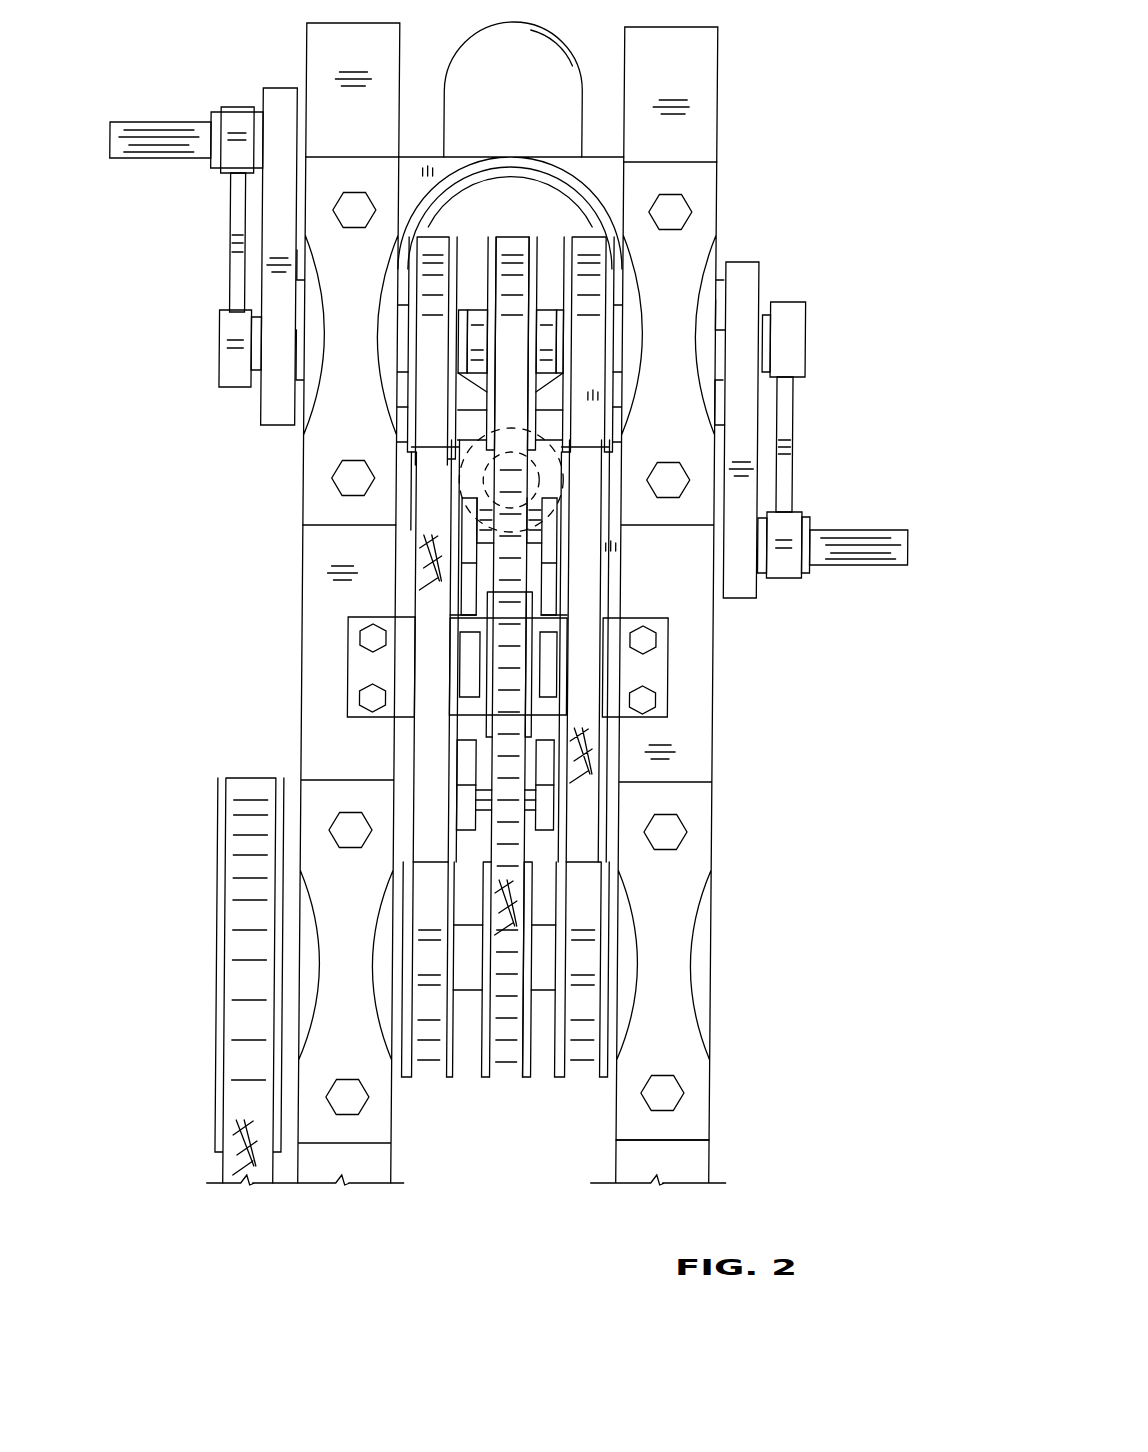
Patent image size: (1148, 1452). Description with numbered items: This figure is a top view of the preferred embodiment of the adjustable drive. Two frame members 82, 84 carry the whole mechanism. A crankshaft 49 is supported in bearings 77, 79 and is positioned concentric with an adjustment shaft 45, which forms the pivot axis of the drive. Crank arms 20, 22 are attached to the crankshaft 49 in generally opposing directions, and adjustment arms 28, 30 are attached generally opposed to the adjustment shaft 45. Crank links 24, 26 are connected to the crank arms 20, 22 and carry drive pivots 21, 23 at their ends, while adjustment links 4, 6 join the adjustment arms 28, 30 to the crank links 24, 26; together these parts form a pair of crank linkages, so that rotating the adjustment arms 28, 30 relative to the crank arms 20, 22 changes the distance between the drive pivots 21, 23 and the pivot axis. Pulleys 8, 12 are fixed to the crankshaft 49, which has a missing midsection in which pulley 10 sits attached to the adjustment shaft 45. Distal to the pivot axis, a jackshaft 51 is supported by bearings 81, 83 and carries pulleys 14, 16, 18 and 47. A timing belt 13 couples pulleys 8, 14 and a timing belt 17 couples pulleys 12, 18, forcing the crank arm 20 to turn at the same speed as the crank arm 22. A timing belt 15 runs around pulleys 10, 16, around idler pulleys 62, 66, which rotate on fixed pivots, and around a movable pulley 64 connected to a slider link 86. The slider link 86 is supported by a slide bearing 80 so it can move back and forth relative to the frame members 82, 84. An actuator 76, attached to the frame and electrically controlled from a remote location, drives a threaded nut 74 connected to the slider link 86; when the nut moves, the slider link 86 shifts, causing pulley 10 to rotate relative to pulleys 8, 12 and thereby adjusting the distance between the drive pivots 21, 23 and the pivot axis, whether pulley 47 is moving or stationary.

The adjustment link 4 is at (232, 249).
The adjustment link 6 is at (796, 430).
The pulley 8 is at (456, 237).
The pulley 10 is at (494, 320).
The pulley 12 is at (616, 283).
The timing belt 13 is at (419, 560).
The pulley 14 is at (420, 1080).
The timing belt 15 is at (522, 897).
The pulley 16 is at (495, 1080).
The timing belt 17 is at (608, 680).
The pulley 18 is at (607, 1078).
The crank arm 20 is at (264, 214).
The drive pivot 21 is at (180, 130).
The crank arm 22 is at (761, 407).
The drive pivot 23 is at (822, 528).
The crank link 24 is at (243, 107).
The crank link 26 is at (785, 580).
The adjustment arm 28 is at (222, 334).
The adjustment arm 30 is at (808, 308).
The adjustment shaft 45 is at (476, 322).
The pulley 47 is at (225, 962).
The crankshaft 49 is at (464, 320).
The jackshaft 51 is at (538, 997).
The idler pulley 62 is at (534, 566).
The movable pulley 64 is at (543, 698).
The idler pulley 66 is at (528, 840).
The threaded nut 74 is at (465, 483).
The actuator 76 is at (483, 30).
The bearing 77 is at (308, 474).
The bearing 79 is at (690, 161).
The slide bearing 80 is at (552, 710).
The bearing 81 is at (388, 1130).
The frame member 82 is at (307, 40).
The bearing 83 is at (698, 1090).
The frame member 84 is at (716, 1156).
The slider link 86 is at (468, 668).